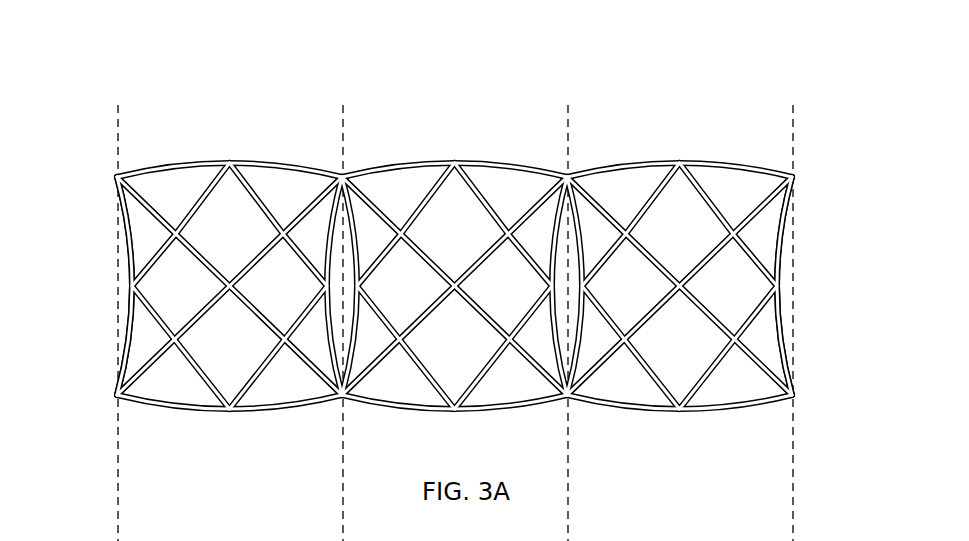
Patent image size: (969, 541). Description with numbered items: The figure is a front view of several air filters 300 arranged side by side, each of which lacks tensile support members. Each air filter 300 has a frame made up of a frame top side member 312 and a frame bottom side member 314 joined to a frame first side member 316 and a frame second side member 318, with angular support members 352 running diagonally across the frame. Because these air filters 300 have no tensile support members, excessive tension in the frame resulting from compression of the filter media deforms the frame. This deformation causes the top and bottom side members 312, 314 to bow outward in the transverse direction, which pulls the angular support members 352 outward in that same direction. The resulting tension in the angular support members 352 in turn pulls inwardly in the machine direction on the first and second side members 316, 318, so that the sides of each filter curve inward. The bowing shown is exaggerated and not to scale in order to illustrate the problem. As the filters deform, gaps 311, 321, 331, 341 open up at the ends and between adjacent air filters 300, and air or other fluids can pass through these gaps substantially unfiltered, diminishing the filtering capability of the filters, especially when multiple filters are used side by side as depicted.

The air filter 300 is at (447, 247).
The gap 311 is at (110, 263).
The frame top side member 312 is at (274, 164).
The frame bottom side member 314 is at (172, 410).
The frame first side member 316 is at (128, 305).
The frame second side member 318 is at (325, 398).
The gap 321 is at (358, 176).
The gap 331 is at (584, 176).
The gap 341 is at (798, 279).
The angular support member 352 is at (381, 205).